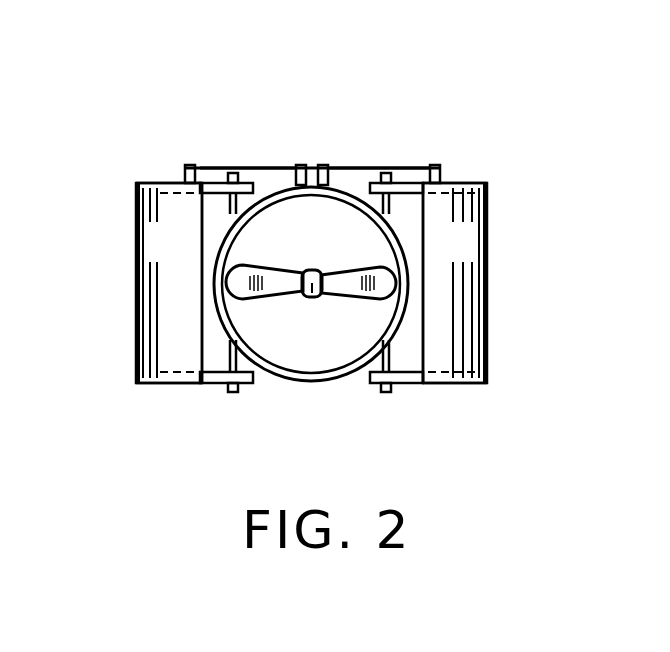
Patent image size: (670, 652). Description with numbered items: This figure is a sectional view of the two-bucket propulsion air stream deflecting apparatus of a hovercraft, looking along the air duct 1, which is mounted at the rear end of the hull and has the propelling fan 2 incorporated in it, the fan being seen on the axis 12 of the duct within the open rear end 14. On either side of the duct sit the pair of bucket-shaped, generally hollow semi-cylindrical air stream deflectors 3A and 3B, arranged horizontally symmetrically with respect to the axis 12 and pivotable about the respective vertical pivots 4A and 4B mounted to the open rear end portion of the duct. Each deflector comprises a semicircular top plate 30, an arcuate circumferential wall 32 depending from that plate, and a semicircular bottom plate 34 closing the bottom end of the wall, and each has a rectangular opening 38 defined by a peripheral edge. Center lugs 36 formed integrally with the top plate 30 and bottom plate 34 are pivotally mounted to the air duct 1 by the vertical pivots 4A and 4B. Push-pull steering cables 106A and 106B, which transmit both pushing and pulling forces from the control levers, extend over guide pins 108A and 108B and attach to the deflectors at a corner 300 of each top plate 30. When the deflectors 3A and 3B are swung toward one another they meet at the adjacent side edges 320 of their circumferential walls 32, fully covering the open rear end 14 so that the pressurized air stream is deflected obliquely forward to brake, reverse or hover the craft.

The air duct 1 is at (327, 385).
The propelling fan 2 is at (270, 296).
The axis of the duct 12 is at (310, 294).
The open rear end of the air duct 14 is at (287, 382).
The air stream deflector 3A is at (498, 214).
The air stream deflector 3B is at (132, 213).
The vertical pivot 4A is at (368, 207).
The vertical pivot 4B is at (245, 207).
The semicircular top plate 30 is at (145, 183).
The corner of the top plate 300 is at (186, 168).
The arcuate circumferential wall 32 is at (136, 285).
The adjacent side edge of the circumferential wall 320 is at (212, 321).
The semicircular bottom plate 34 is at (164, 385).
The center lug 36 is at (213, 181).
The rectangular opening 38 is at (214, 222).
The push-pull steering cable 106A is at (358, 168).
The push-pull steering cable 106B is at (255, 168).
The guide pin 108A is at (322, 165).
The guide pin 108B is at (297, 165).